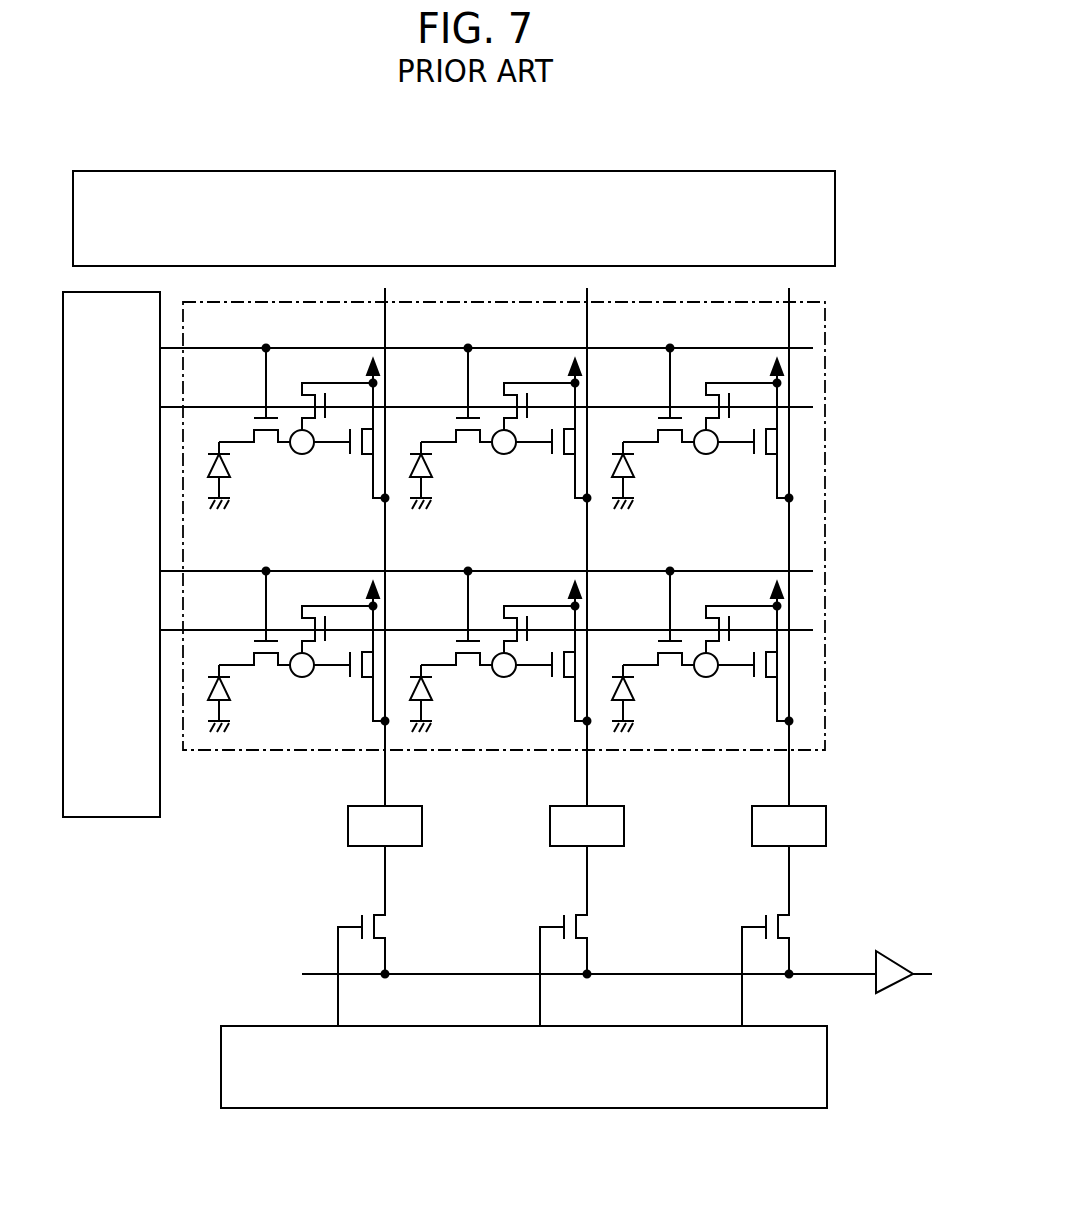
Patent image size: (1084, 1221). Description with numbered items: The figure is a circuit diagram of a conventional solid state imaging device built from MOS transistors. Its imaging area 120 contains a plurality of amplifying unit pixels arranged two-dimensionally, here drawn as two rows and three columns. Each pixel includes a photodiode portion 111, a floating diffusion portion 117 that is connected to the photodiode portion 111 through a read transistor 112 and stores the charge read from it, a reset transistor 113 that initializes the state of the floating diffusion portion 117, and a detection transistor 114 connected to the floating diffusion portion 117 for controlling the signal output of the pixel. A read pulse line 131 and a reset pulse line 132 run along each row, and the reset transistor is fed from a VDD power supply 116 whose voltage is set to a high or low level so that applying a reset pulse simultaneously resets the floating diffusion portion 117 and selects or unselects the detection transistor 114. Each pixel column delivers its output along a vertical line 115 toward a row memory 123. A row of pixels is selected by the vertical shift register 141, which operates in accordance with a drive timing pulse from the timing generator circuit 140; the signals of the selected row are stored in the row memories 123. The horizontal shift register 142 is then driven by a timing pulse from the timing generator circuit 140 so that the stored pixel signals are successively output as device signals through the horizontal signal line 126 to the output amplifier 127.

The photodiode portion 111 is at (633, 468).
The read transistor 112 is at (665, 410).
The reset transistor 113 is at (738, 400).
The detection transistor 114 is at (770, 437).
The vertical signal line 115 is at (790, 520).
The VDD power supply 116 is at (772, 360).
The floating diffusion portion 117 is at (707, 455).
The imaging area 120 is at (825, 697).
The row memory 123 is at (355, 847).
The horizontal signal line 126 is at (838, 975).
The output amplifier 127 is at (888, 990).
The read pulse line 131 is at (538, 449).
The reset pulse line 132 is at (538, 508).
The timing generator circuit 140 is at (835, 202).
The vertical shift register 141 is at (95, 818).
The horizontal shift register 142 is at (221, 1063).